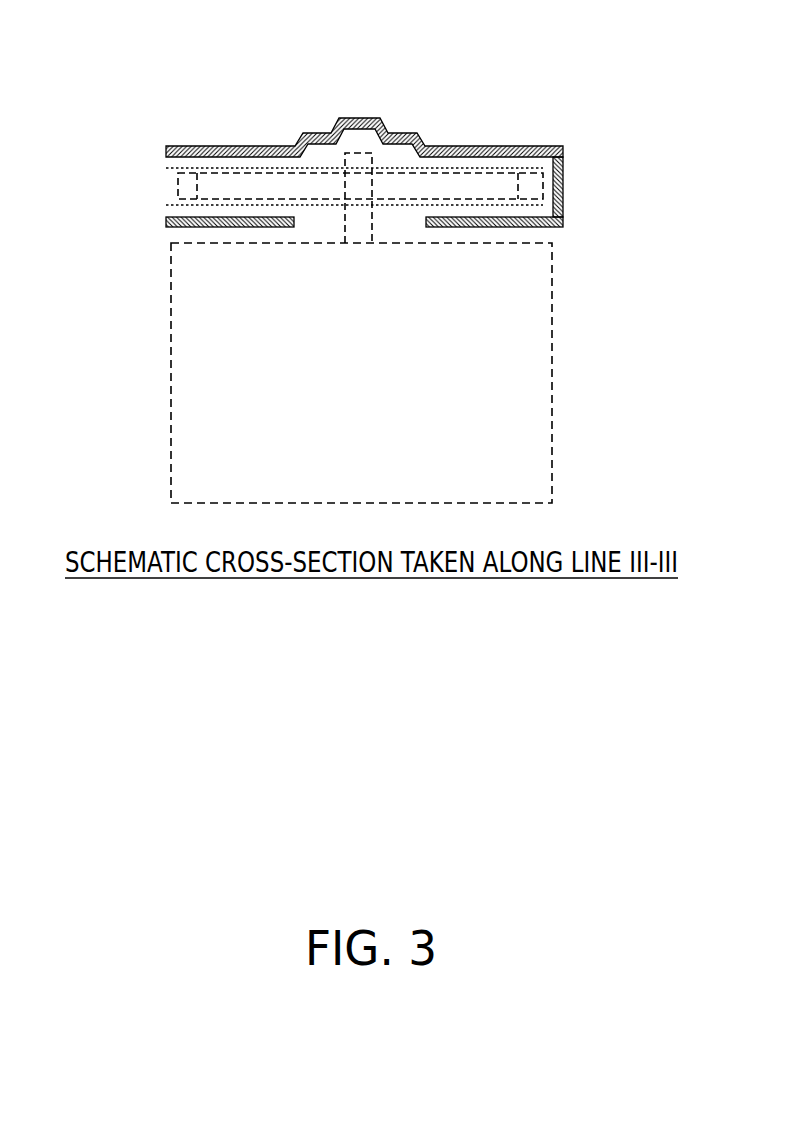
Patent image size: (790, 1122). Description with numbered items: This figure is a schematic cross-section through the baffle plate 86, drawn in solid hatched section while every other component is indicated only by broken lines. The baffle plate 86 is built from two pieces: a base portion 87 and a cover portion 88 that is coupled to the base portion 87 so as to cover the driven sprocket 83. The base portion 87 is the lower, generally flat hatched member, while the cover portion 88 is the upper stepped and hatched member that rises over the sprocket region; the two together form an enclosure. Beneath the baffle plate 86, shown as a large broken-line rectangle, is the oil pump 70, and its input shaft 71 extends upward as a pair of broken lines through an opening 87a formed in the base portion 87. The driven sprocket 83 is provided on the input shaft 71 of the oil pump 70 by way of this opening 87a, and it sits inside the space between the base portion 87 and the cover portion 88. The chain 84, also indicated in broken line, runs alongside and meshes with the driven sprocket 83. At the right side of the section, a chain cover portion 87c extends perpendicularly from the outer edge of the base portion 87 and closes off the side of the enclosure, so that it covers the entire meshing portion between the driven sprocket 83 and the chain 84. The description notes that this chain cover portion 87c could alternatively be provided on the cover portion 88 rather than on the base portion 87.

The oil pump 70 is at (551, 382).
The input shaft 71 is at (347, 157).
The driven sprocket 83 is at (413, 166).
The chain 84 is at (197, 172).
The baffle plate 86 is at (411, 175).
The base portion 87 is at (555, 228).
The opening 87a is at (314, 240).
The chain cover portion 87c is at (563, 193).
The cover portion 88 is at (466, 147).